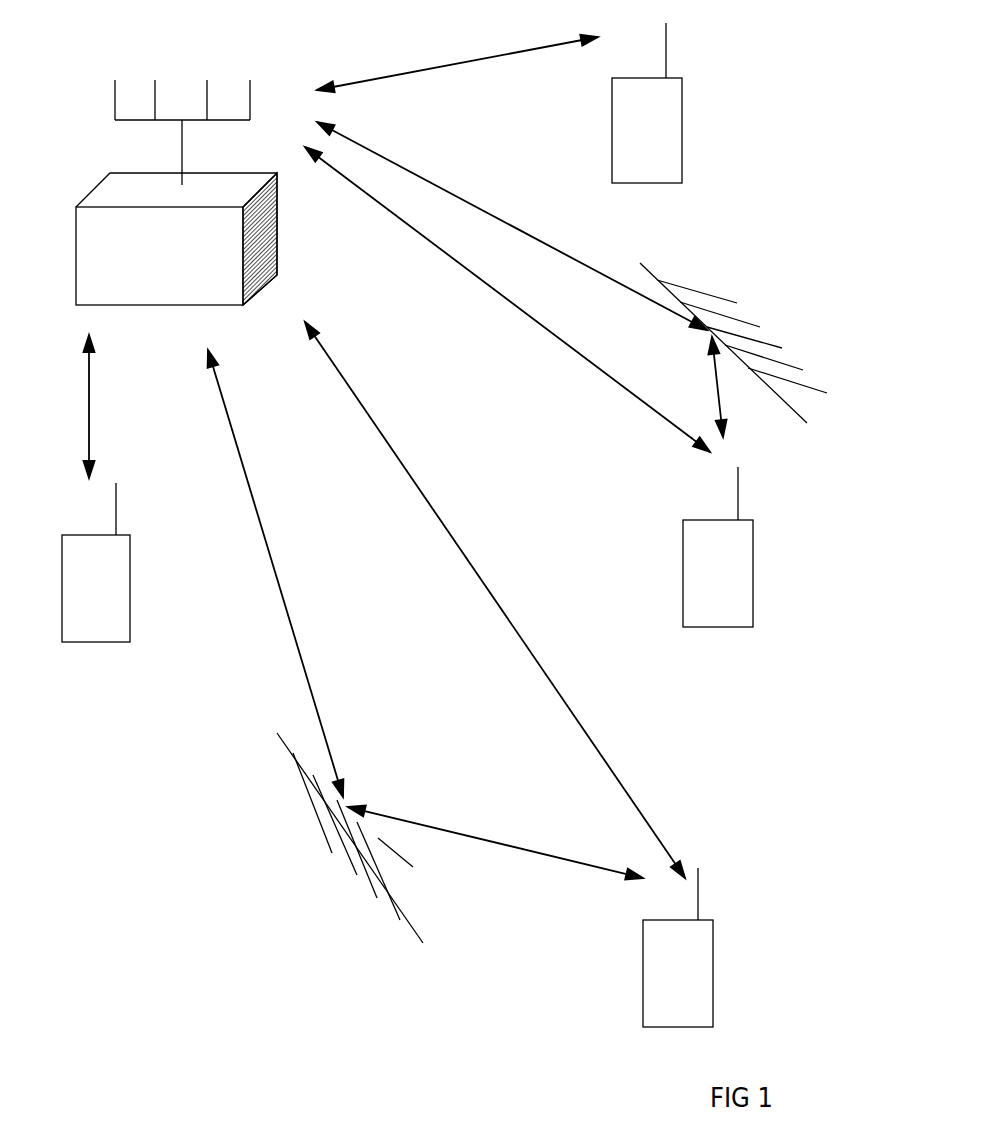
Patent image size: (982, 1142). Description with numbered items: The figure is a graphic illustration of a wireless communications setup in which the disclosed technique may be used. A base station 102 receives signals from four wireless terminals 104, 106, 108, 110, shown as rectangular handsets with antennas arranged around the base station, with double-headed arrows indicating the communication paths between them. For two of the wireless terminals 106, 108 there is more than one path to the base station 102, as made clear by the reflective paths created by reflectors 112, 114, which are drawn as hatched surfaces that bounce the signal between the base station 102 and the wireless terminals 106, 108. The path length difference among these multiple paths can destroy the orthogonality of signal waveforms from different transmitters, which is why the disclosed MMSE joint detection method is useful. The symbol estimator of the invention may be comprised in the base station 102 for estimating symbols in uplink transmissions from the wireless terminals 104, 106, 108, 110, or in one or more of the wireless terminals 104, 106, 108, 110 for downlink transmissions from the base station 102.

The base station 102 is at (182, 176).
The wireless terminal 104 is at (668, 112).
The wireless terminal 106 is at (679, 936).
The wireless terminal 108 is at (670, 577).
The wireless terminal 110 is at (138, 517).
The reflector 112 is at (741, 302).
The reflector 114 is at (290, 792).